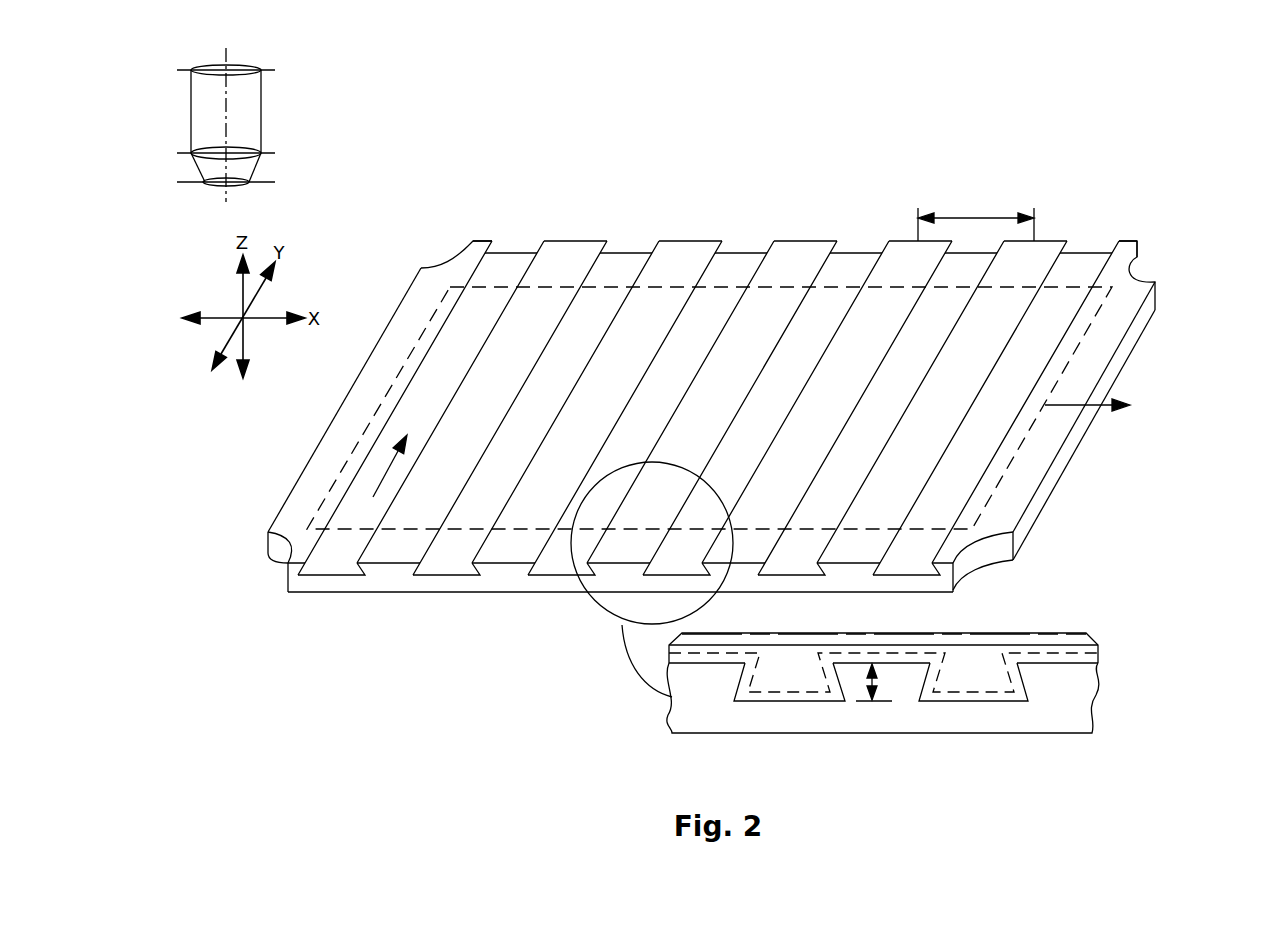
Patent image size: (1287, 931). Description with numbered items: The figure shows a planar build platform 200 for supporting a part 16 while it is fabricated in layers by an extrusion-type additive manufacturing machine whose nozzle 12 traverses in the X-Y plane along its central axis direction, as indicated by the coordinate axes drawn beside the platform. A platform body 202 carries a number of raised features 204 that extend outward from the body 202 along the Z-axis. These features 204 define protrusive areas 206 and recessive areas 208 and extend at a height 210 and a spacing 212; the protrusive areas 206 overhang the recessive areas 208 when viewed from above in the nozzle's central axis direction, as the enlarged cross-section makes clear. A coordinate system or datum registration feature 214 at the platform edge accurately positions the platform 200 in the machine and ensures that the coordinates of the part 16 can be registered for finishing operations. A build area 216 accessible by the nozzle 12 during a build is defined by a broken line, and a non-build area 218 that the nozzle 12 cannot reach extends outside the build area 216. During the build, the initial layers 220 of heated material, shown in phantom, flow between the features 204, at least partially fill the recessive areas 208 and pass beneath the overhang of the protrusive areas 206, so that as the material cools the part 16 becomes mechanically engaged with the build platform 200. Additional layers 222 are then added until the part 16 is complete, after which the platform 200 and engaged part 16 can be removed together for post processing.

The nozzle 12 is at (254, 123).
The part 16 is at (1130, 639).
The planar build platform 200 is at (1186, 149).
The platform body 202 is at (445, 582).
The raised features 204 is at (510, 572).
The protrusive areas 206 is at (562, 255).
The recessive areas 208 is at (622, 258).
The height 210 is at (875, 683).
The spacing 212 is at (975, 212).
The datum registration feature 214 is at (1130, 266).
The build area 216 is at (373, 497).
The non-build area 218 is at (1060, 410).
The initial layers 220 is at (978, 667).
The additional layers 222 is at (963, 640).